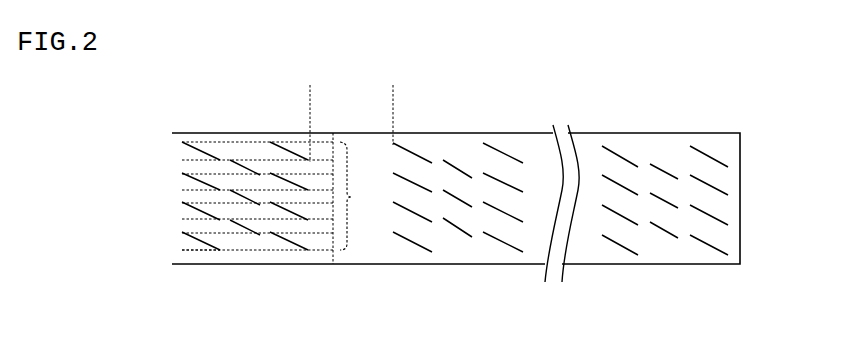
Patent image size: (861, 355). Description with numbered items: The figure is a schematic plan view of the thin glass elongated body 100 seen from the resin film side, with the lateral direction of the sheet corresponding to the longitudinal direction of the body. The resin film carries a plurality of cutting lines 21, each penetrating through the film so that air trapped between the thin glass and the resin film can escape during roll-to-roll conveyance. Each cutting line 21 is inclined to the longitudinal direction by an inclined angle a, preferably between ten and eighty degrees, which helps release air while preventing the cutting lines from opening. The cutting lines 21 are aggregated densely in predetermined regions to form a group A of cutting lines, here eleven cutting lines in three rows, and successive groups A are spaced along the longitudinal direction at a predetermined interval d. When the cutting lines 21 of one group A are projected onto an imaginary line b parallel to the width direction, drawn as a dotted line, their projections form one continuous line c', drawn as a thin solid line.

The thin glass elongated body 100 is at (713, 90).
The cutting lines 21 is at (194, 148).
The inclined angle a is at (196, 243).
The imaginary line b is at (337, 140).
The continuous line c' is at (357, 196).
The interval d is at (393, 92).
The group of cutting lines A is at (311, 270).